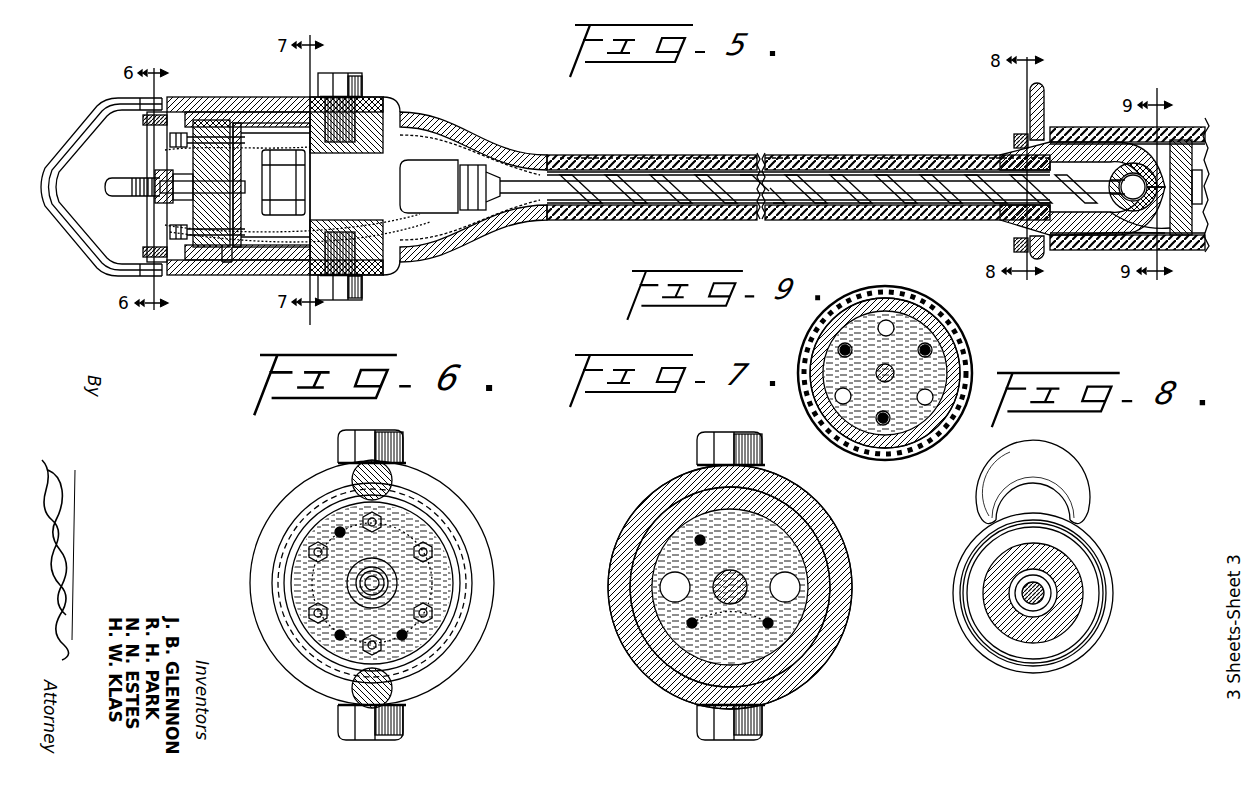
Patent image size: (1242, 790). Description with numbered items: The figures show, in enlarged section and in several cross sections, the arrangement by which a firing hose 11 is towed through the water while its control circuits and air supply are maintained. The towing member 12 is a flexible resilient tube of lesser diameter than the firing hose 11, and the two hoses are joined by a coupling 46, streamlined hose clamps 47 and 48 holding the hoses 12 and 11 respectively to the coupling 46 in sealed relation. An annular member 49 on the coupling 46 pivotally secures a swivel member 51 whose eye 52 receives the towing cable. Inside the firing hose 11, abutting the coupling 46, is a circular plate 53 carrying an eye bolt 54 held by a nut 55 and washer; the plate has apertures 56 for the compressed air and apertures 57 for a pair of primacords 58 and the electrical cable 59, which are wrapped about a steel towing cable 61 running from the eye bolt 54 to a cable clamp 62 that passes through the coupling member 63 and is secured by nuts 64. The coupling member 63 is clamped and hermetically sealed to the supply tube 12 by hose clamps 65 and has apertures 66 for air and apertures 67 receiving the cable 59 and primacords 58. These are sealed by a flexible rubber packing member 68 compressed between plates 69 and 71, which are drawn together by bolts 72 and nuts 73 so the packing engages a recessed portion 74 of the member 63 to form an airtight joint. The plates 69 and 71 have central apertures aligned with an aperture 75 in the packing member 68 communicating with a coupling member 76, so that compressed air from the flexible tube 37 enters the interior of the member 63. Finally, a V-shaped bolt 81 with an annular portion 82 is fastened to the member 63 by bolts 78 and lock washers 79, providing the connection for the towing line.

In FIG. 5, the firing hose 11 is at (1070, 127).
In FIG. 5, the towing member 12 is at (690, 222).
In FIG. 5, the flexible tube 37 is at (120, 180).
In FIG. 6, the flexible tube 37 is at (370, 572).
In FIG. 5, the coupling 46 is at (1010, 160).
In FIG. 9, the coupling 46 is at (822, 392).
In FIG. 8, the coupling 46 is at (1080, 595).
In FIG. 5, the hose clamp 47 is at (920, 157).
In FIG. 5, the hose clamp 48 is at (1120, 127).
In FIG. 5, the annular member 49 is at (1016, 135).
In FIG. 5, the swivel member 51 is at (1037, 252).
In FIG. 8, the swivel member 51 is at (1055, 580).
In FIG. 5, the eye 52 is at (1045, 92).
In FIG. 8, the eye 52 is at (1078, 482).
In FIG. 5, the circular plate 53 is at (1180, 252).
In FIG. 5, the eye bolt 54 is at (1115, 250).
In FIG. 9, the eye bolt 54 is at (812, 378).
In FIG. 5, the nut 55 is at (1182, 160).
In FIG. 5, the apertures 56 is at (1170, 140).
In FIG. 9, the apertures 56 is at (886, 320).
In FIG. 5, the apertures 57 is at (1198, 245).
In FIG. 9, the apertures 57 is at (840, 348).
In FIG. 5, the primacords 58 is at (280, 262).
In FIG. 6, the primacords 58 is at (430, 680).
In FIG. 7, the primacords 58 is at (692, 626).
In FIG. 9, the primacords 58 is at (840, 352).
In FIG. 8, the primacords 58 is at (1050, 590).
In FIG. 5, the electrical cable 59 is at (625, 220).
In FIG. 6, the electrical cable 59 is at (320, 520).
In FIG. 7, the electrical cable 59 is at (632, 530).
In FIG. 9, the electrical cable 59 is at (850, 445).
In FIG. 8, the electrical cable 59 is at (990, 600).
In FIG. 5, the steel towing cable 61 is at (1088, 250).
In FIG. 8, the steel towing cable 61 is at (990, 625).
In FIG. 5, the cable clamp 62 is at (473, 186).
In FIG. 6, the cable clamp 62 is at (465, 575).
In FIG. 7, the cable clamp 62 is at (828, 575).
In FIG. 5, the coupling member 63 is at (500, 140).
In FIG. 7, the coupling member 63 is at (775, 545).
In FIG. 5, the nuts 64 is at (280, 218).
In FIG. 5, the hose clamps 65 is at (630, 157).
In FIG. 7, the apertures 66 is at (668, 590).
In FIG. 7, the apertures 67 is at (620, 545).
In FIG. 5, the flexible packing member 68 is at (236, 123).
In FIG. 5, the plate 69 is at (168, 100).
In FIG. 6, the plate 69 is at (475, 605).
In FIG. 5, the plate 71 is at (226, 262).
In FIG. 5, the bolts 72 is at (170, 140).
In FIG. 6, the bolts 72 is at (430, 545).
In FIG. 5, the nuts 73 is at (178, 136).
In FIG. 6, the nuts 73 is at (448, 545).
In FIG. 5, the recessed portion 74 is at (214, 120).
In FIG. 5, the aperture 75 is at (175, 205).
In FIG. 5, the coupling member 76 is at (156, 195).
In FIG. 6, the coupling member 76 is at (375, 556).
In FIG. 5, the bolts 78 is at (355, 75).
In FIG. 6, the bolts 78 is at (403, 445).
In FIG. 7, the bolts 78 is at (697, 448).
In FIG. 5, the lock washers 79 is at (362, 90).
In FIG. 6, the lock washers 79 is at (406, 460).
In FIG. 7, the lock washers 79 is at (697, 465).
In FIG. 5, the V-shaped bolt 81 is at (95, 135).
In FIG. 6, the V-shaped bolt 81 is at (392, 478).
In FIG. 5, the annular portion 82 is at (282, 97).
In FIG. 6, the annular portion 82 is at (455, 502).
In FIG. 7, the annular portion 82 is at (845, 535).